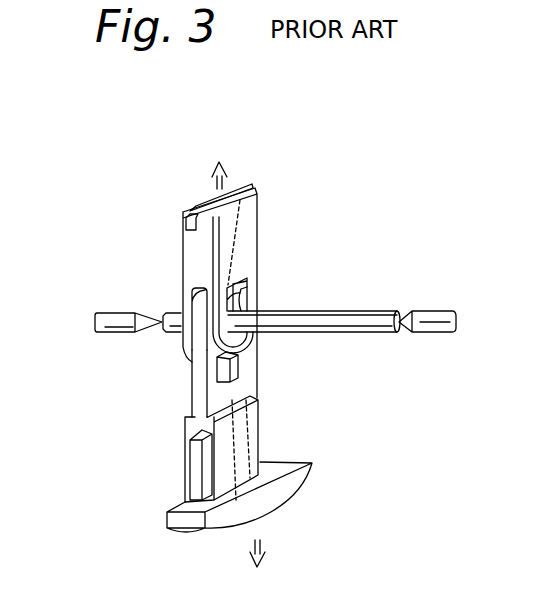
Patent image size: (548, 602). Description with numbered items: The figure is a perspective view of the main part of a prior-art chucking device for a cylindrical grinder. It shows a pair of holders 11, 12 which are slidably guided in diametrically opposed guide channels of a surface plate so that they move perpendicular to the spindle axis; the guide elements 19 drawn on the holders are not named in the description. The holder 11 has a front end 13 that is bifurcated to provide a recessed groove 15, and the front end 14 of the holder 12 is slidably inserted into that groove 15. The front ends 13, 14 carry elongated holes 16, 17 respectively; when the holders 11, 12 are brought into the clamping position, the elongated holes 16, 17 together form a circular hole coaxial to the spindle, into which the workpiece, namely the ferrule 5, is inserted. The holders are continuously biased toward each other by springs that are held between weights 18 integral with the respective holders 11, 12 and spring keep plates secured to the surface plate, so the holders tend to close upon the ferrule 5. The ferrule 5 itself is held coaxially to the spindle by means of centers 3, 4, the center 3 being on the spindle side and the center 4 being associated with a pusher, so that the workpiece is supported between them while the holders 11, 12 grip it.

The center 3 is at (114, 332).
The center 4 is at (445, 328).
The ferrule 5 is at (385, 310).
The holder 11 is at (248, 238).
The holder 12 is at (258, 428).
The front end 13 is at (255, 297).
The front end 14 is at (198, 369).
The recessed groove 15 is at (198, 296).
The elongated hole 16 is at (250, 282).
The elongated hole 17 is at (222, 366).
The weight 18 is at (287, 500).
The guide rail 19 is at (188, 217).